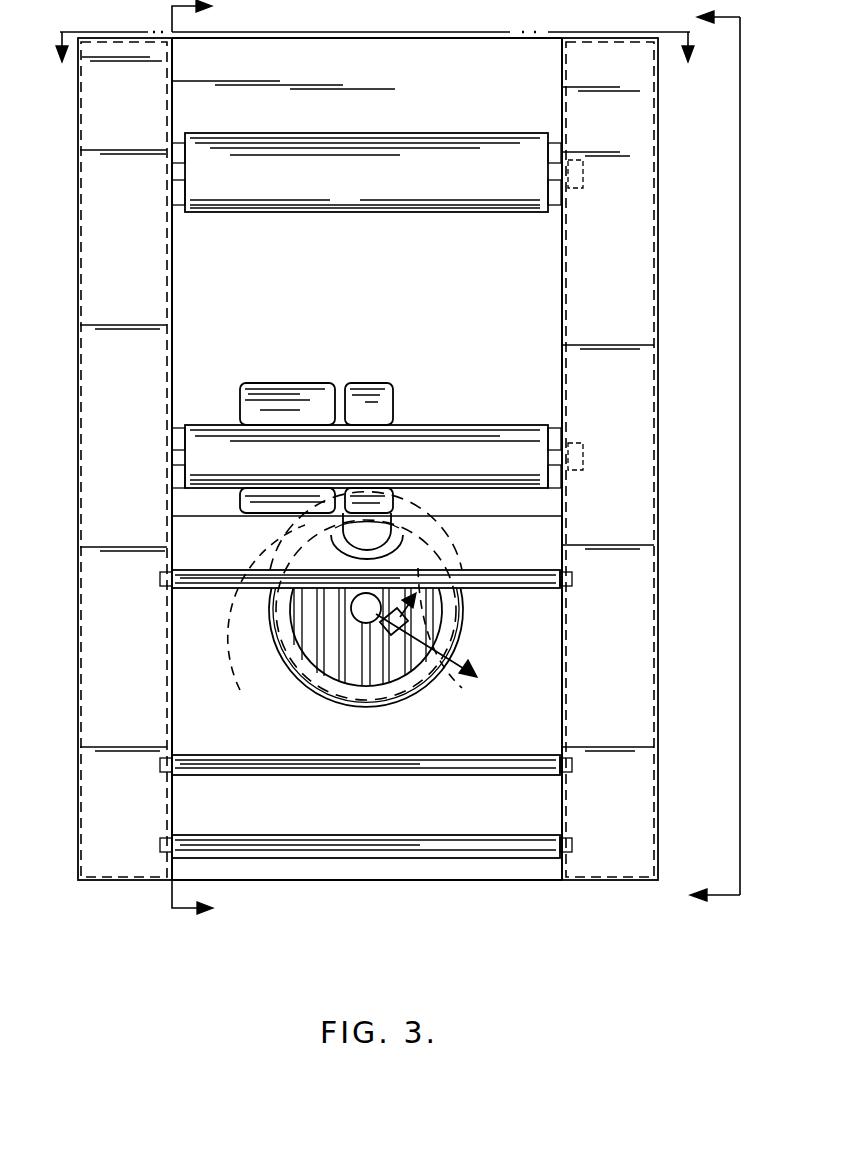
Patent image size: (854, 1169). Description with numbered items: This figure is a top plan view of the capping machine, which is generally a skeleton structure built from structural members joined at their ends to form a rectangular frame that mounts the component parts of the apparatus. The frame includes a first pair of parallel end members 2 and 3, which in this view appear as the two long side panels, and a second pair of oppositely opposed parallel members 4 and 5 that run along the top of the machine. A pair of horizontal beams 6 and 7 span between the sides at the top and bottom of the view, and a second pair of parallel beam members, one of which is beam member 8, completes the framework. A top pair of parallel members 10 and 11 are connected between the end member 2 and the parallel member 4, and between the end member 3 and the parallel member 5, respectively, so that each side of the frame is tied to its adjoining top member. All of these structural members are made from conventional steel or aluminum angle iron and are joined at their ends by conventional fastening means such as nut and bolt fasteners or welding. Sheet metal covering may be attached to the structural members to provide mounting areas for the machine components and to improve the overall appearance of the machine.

The end member 2 is at (112, 880).
The end member 3 is at (607, 880).
The parallel member 4 is at (93, 42).
The parallel member 5 is at (601, 16).
The horizontal beam 6 is at (388, 33).
The horizontal beam 7 is at (376, 878).
The parallel beam member 8 is at (703, 468).
The top parallel member 10 is at (165, 290).
The top parallel member 11 is at (587, 302).